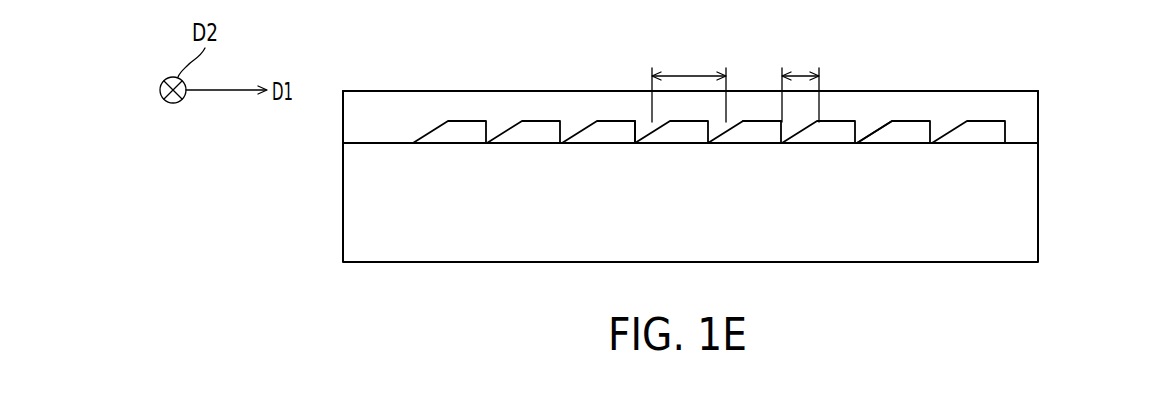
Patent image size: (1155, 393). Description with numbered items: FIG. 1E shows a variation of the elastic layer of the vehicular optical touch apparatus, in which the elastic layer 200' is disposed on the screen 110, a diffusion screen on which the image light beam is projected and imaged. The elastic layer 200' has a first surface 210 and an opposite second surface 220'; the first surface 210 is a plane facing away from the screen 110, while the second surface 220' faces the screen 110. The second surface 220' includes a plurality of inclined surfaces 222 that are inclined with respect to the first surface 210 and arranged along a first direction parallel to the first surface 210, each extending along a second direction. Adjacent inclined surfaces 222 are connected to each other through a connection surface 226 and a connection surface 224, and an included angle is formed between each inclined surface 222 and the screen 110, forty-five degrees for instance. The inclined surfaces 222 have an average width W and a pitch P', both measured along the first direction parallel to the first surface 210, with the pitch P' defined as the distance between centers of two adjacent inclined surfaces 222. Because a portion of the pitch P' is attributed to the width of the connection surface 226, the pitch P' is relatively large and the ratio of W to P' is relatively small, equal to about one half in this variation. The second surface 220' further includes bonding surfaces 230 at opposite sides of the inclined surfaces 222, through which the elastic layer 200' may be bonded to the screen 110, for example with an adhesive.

The screen 110 is at (1015, 218).
The elastic layer 200' is at (733, 117).
The first surface 210 is at (993, 87).
The bonding surfaces 230 is at (1020, 154).
The second surface 220' is at (638, 166).
The inclined surfaces 222 is at (883, 139).
The connection surface 224 is at (630, 132).
The connection surface 226 is at (763, 124).
The pitch P' is at (689, 83).
The average width W is at (800, 82).